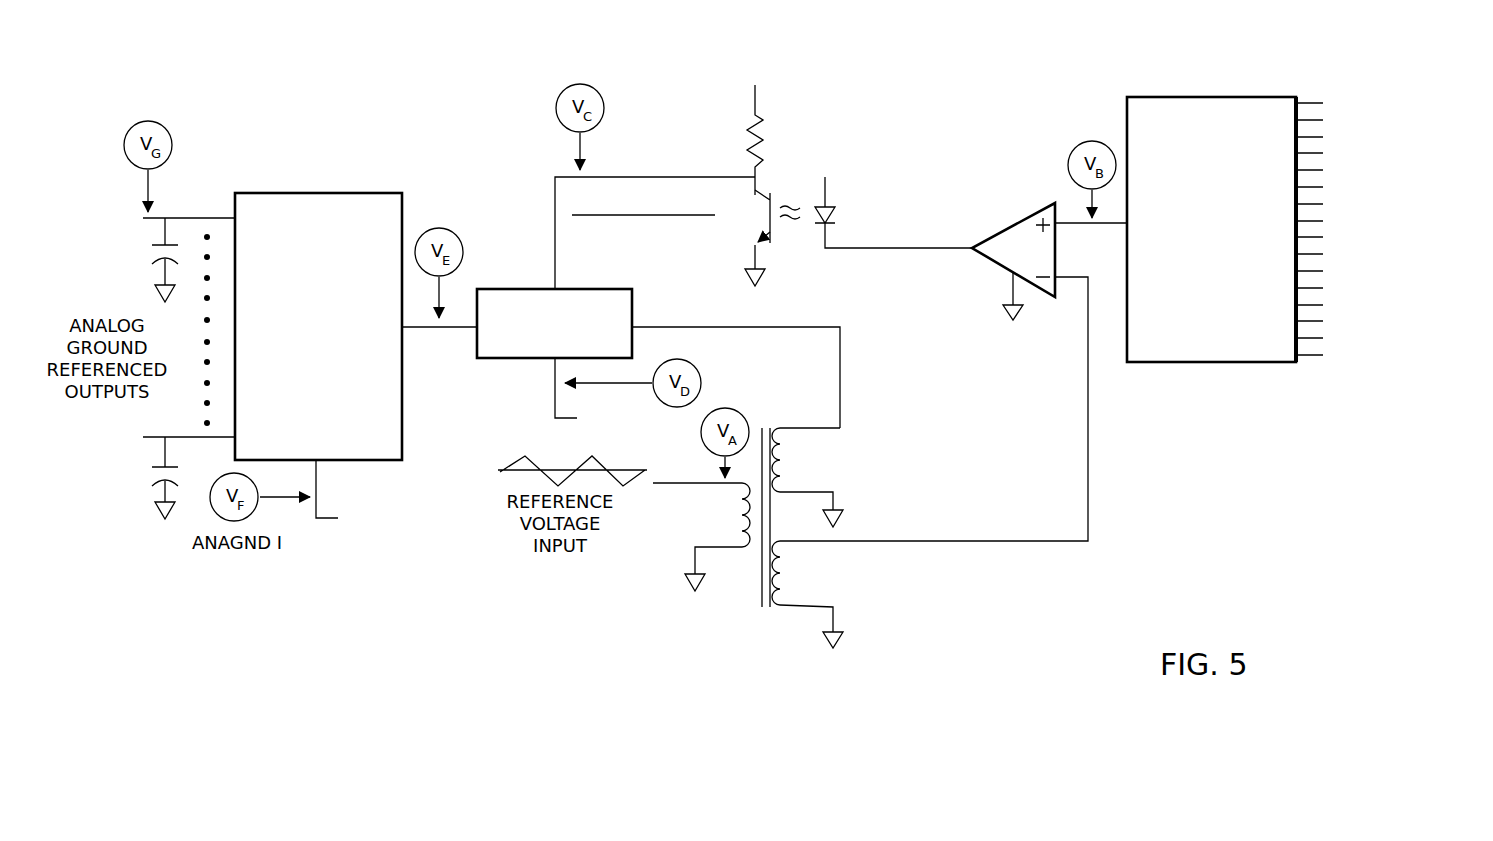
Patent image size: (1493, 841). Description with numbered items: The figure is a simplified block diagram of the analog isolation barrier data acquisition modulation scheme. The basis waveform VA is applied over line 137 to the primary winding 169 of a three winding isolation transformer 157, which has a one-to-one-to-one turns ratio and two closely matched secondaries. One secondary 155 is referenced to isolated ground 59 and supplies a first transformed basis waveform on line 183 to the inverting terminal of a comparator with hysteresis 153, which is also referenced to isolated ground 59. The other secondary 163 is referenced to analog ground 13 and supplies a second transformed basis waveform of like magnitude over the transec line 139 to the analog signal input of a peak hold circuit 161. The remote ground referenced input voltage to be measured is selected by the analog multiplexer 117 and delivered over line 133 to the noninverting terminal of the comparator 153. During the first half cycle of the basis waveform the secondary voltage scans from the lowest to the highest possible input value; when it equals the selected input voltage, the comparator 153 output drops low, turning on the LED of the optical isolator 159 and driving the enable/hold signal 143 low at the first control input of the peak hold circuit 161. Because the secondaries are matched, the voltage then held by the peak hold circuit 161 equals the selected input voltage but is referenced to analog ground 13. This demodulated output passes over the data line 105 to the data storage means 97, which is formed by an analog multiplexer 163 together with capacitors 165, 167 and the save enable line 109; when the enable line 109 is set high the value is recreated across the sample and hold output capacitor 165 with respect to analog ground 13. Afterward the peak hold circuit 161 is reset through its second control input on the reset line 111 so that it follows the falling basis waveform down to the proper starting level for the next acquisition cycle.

The data storage means 97 is at (207, 140).
The analog multiplexer 163 is at (292, 193).
The sample and hold output capacitor 165 is at (158, 245).
The capacitor 167 is at (157, 467).
The analog ground 13 is at (157, 283).
The save enable line 109 is at (325, 518).
The data line 105 is at (462, 327).
The peak hold circuit 161 is at (578, 290).
The enable/hold signal 143 is at (674, 177).
The optical isolator 159 is at (795, 180).
The comparator with hysteresis 153 is at (1018, 225).
The line 133 is at (1117, 225).
The line 183 is at (1010, 541).
The analog multiplexer 117 is at (1185, 97).
The transec line 139 is at (805, 328).
The reset line 111 is at (555, 402).
The line 137 is at (664, 485).
The primary winding 169 is at (750, 525).
The three winding isolation transformer 157 is at (678, 655).
The secondary 155 is at (790, 582).
The isolated ground 59 is at (1005, 303).